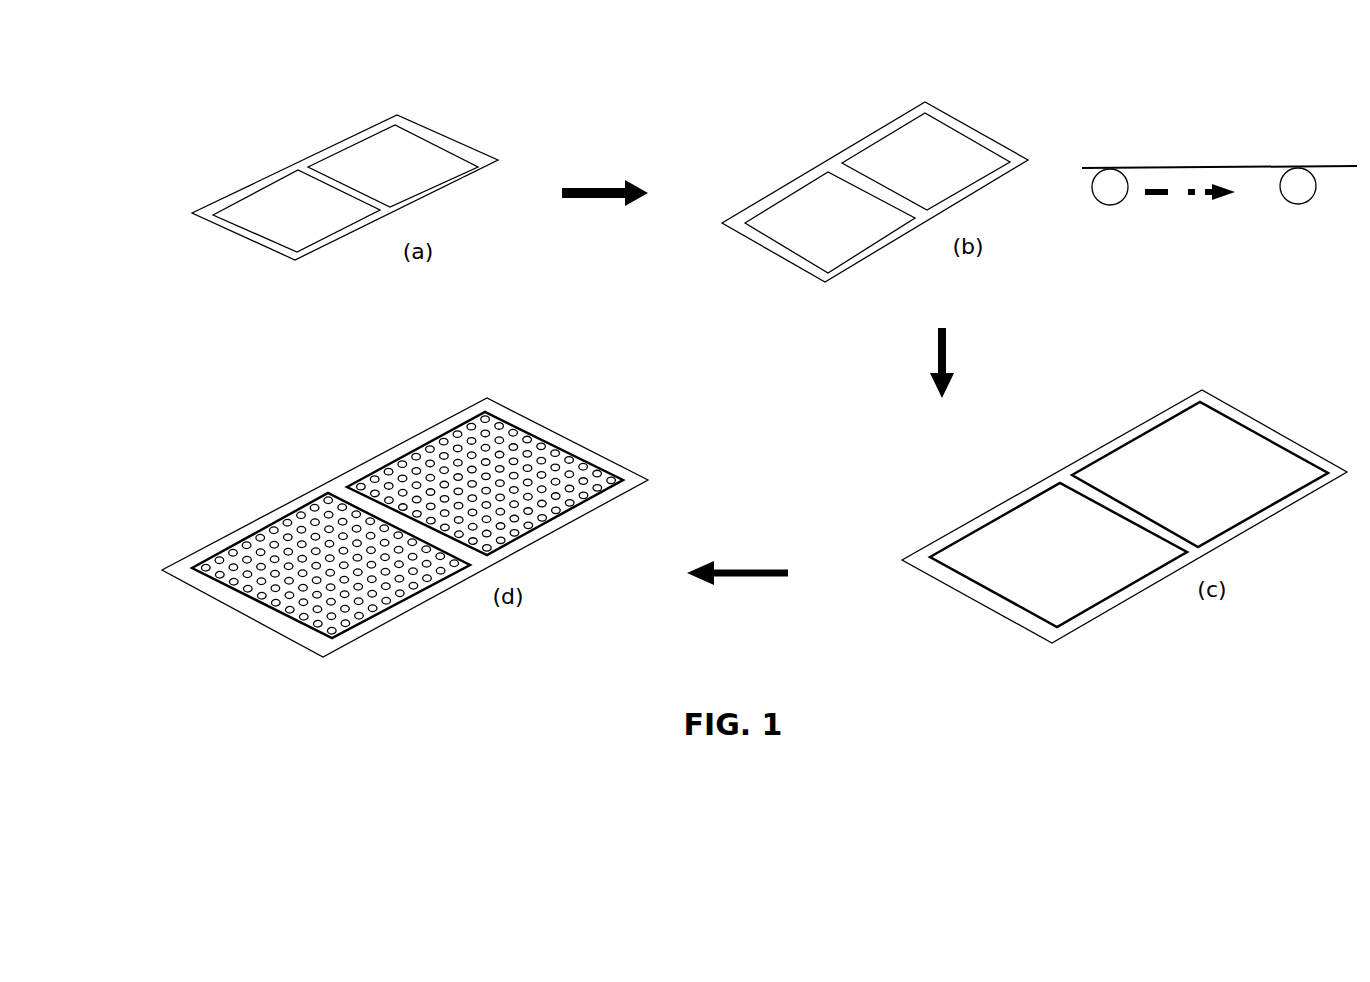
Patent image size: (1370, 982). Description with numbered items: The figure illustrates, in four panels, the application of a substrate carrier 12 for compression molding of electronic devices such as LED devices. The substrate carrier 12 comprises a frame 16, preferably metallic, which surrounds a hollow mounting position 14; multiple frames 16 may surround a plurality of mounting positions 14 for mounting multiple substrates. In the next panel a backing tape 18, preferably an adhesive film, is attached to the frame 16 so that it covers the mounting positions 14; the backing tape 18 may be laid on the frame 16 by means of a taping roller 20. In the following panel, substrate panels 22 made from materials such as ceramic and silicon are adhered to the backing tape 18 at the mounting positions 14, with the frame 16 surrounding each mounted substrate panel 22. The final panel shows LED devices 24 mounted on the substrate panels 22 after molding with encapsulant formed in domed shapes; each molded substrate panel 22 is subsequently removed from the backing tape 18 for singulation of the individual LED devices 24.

The substrate carrier 12 is at (325, 169).
The hollow mounting position 14 is at (278, 225).
The frame 16 is at (222, 197).
The backing tape 18 is at (740, 227).
The taping roller 20 is at (1292, 196).
The substrate panel 22 is at (995, 535).
The LED device 24 is at (408, 480).